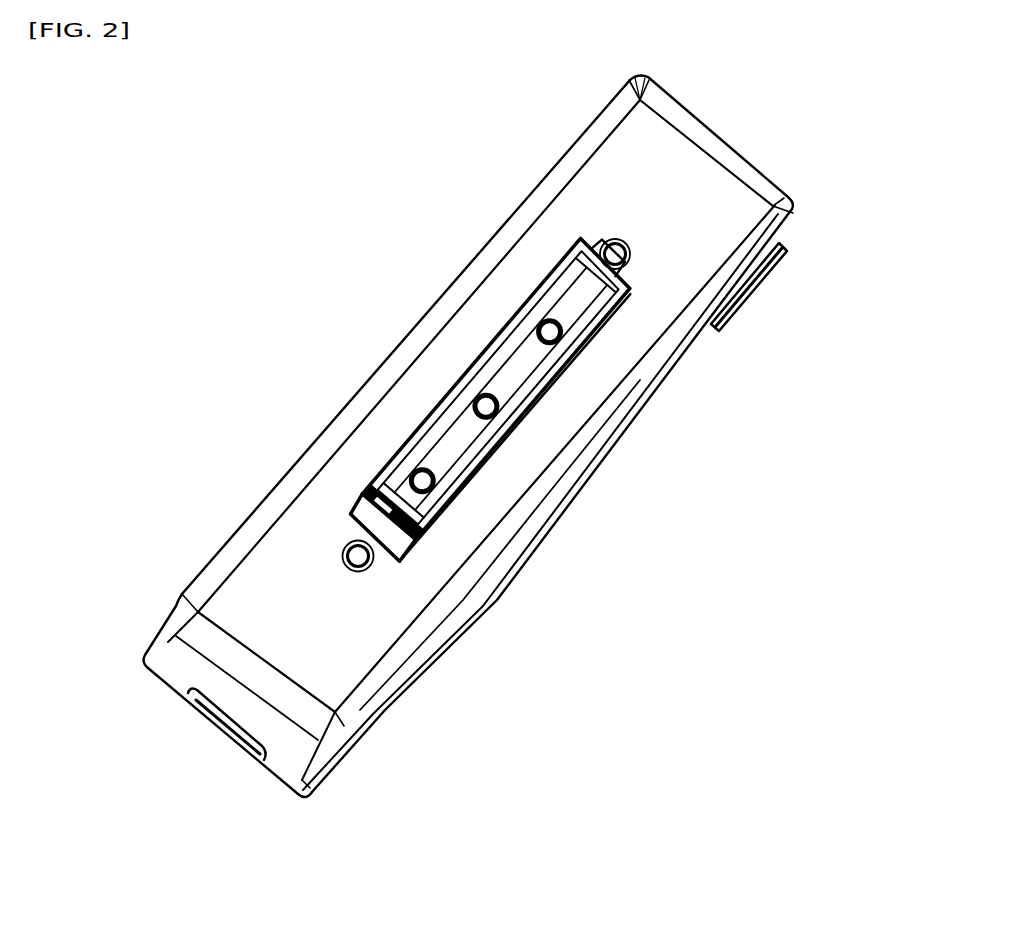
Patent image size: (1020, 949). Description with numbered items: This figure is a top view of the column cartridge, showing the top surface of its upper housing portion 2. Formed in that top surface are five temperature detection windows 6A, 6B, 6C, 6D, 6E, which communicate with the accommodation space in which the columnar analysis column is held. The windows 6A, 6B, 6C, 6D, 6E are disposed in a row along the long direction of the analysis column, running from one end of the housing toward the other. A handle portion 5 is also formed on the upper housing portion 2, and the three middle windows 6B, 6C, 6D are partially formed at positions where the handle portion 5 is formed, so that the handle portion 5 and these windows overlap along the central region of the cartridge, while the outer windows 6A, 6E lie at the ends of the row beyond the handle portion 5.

The upper housing portion 2 is at (550, 483).
The handle portion 5 is at (545, 390).
The temperature detection window 6A is at (350, 538).
The temperature detection window 6B is at (417, 457).
The temperature detection window 6C is at (483, 392).
The temperature detection window 6D is at (548, 316).
The temperature detection window 6E is at (615, 227).